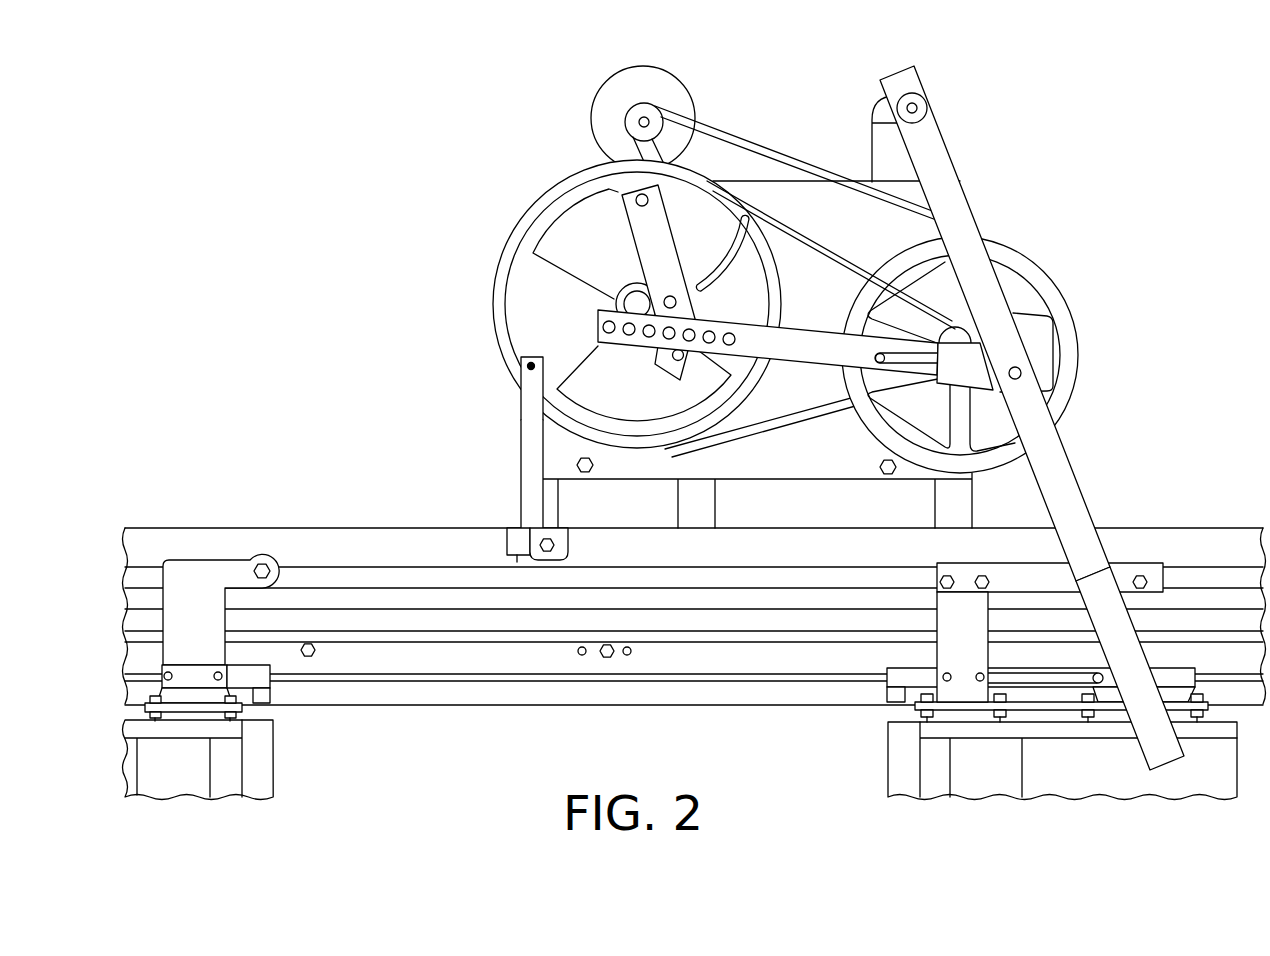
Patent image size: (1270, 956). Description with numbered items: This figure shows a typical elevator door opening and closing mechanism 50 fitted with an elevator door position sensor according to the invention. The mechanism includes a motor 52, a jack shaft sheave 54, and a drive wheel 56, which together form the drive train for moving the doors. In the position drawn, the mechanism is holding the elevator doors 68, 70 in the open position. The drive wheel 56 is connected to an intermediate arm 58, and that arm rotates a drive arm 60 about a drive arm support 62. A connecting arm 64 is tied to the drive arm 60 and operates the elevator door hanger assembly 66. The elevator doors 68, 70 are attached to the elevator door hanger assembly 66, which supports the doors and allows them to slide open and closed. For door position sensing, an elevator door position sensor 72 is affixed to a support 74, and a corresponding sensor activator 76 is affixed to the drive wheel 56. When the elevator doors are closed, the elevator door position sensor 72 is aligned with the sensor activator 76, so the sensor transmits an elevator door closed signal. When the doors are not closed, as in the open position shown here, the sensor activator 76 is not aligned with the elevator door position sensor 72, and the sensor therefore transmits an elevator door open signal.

The elevator door opening and closing mechanism 50 is at (1070, 102).
The motor 52 is at (612, 89).
The jack shaft sheave 54 is at (1043, 281).
The drive wheel 56 is at (495, 268).
The intermediate arm 58 is at (789, 350).
The drive arm 60 is at (968, 233).
The drive arm support 62 is at (876, 108).
The connecting arm 64 is at (1131, 648).
The elevator door hanger assembly 66 is at (1060, 718).
The elevator door 68 is at (1000, 774).
The elevator door 70 is at (193, 780).
The elevator door position sensor 72 is at (524, 361).
The support 74 is at (527, 414).
The sensor activator 76 is at (753, 271).